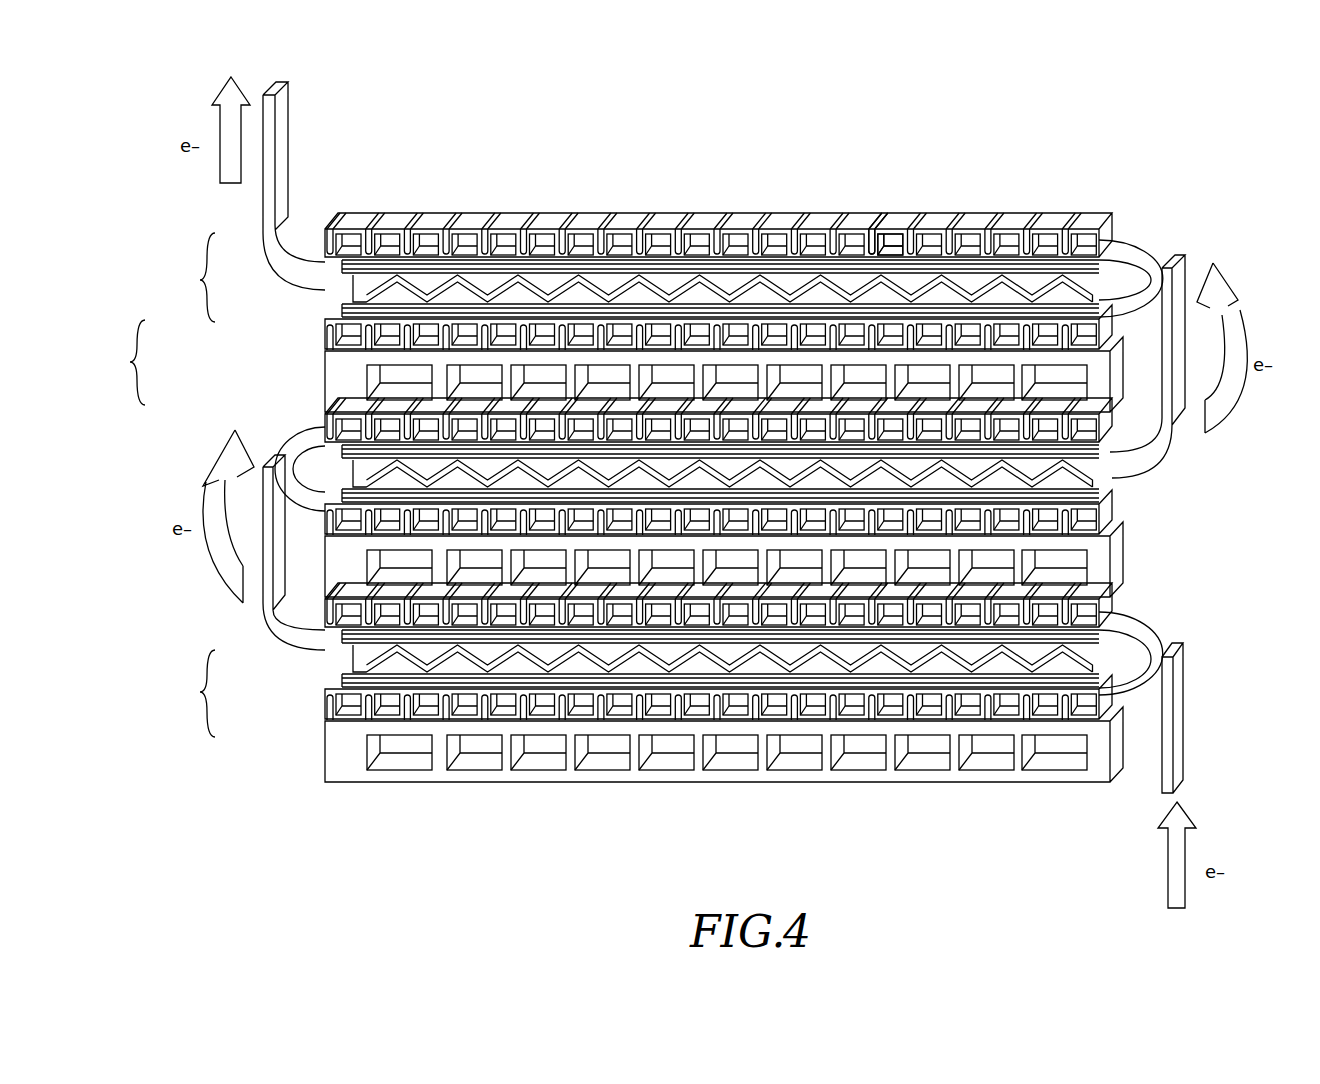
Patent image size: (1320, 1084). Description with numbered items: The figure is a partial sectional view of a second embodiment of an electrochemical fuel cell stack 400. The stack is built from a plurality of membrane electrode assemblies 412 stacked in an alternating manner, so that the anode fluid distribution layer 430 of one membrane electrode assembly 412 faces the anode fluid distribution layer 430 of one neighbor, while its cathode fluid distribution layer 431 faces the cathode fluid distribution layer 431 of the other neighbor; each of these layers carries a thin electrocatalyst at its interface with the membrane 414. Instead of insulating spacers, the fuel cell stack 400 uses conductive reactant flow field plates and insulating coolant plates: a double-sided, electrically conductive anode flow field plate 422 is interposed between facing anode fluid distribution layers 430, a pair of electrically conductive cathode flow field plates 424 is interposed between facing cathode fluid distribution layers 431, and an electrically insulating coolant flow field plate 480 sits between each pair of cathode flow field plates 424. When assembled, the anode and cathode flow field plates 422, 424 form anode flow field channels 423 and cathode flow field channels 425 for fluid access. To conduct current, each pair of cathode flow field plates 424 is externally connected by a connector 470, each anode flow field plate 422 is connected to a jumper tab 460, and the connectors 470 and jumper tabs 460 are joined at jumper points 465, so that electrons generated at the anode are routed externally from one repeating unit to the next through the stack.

The fuel cell stack 400 is at (1104, 138).
The membrane electrode assembly 412 is at (154, 485).
The membrane 414 is at (328, 268).
The anode flow field plate 422 is at (655, 277).
The anode flow field channels 423 is at (953, 277).
The cathode flow field plate 424 is at (520, 214).
The cathode flow field channels 425 is at (888, 240).
The anode fluid distribution layer 430 is at (328, 290).
The cathode fluid distribution layer 431 is at (328, 262).
The jumper tab 460 is at (1178, 318).
The jumper point 465 is at (1192, 265).
The connector 470 is at (1148, 256).
The coolant flow field plate 480 is at (1117, 370).